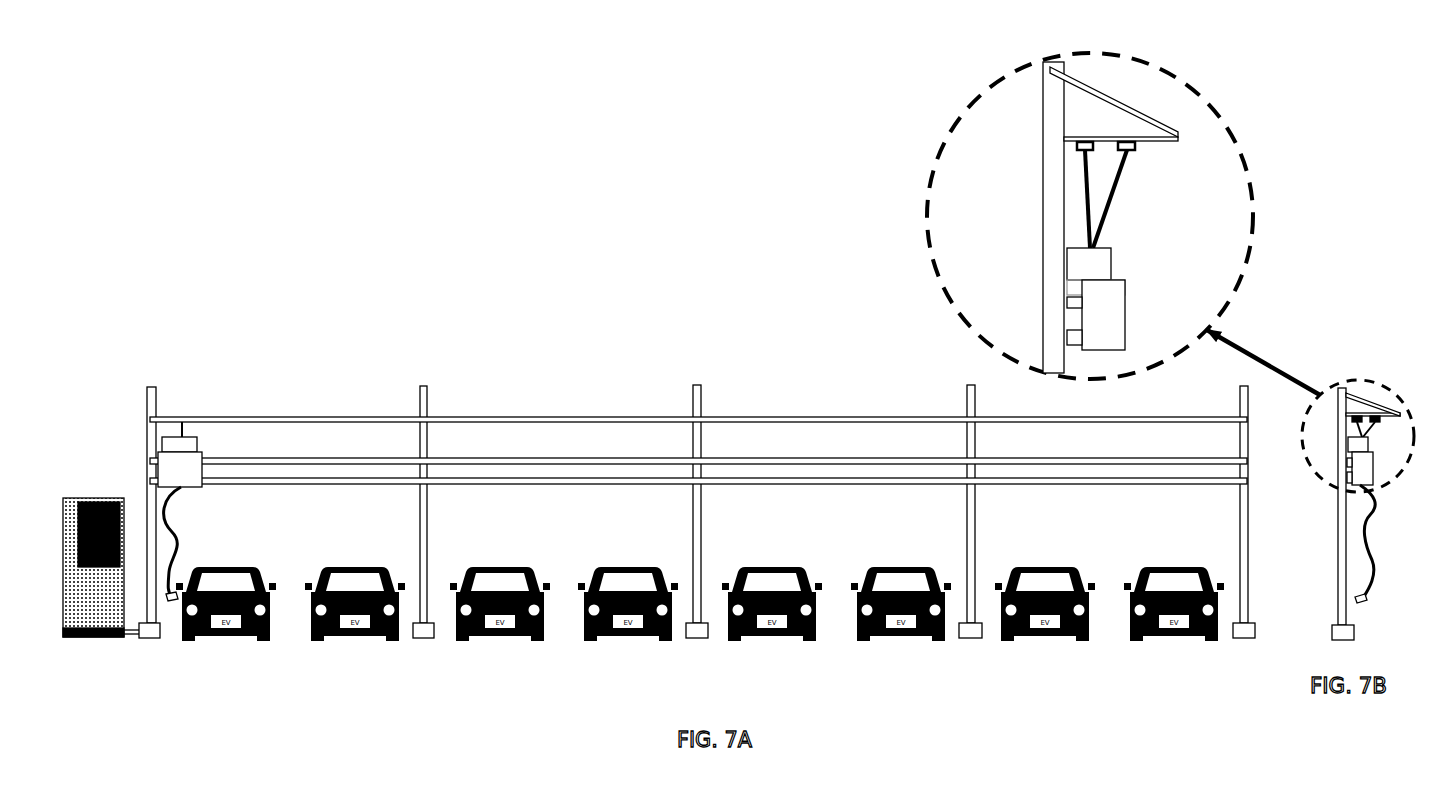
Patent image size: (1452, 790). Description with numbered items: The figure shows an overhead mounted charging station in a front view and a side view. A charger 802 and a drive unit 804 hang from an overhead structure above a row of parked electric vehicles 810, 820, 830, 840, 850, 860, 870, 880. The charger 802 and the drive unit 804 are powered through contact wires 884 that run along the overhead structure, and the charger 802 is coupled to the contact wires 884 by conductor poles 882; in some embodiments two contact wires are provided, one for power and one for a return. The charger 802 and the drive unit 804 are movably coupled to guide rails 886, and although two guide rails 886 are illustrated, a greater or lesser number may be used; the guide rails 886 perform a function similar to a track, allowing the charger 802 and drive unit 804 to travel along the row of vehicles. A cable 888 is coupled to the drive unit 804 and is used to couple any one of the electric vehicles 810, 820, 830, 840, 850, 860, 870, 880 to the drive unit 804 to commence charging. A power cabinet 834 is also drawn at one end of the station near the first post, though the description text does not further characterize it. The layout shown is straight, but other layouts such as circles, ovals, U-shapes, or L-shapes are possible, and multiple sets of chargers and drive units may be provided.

In FIG. 7A, the charger 802 is at (173, 430).
In FIG. 7B, the charger 802 is at (1111, 263).
In FIG. 7A, the drive unit 804 is at (206, 450).
In FIG. 7B, the drive unit 804 is at (1126, 320).
In FIG. 7A, the electric vehicle 810 is at (229, 641).
In FIG. 7A, the electric vehicle 820 is at (358, 641).
In FIG. 7A, the electric vehicle 830 is at (503, 641).
In FIG. 7A, the electric vehicle 840 is at (631, 641).
In FIG. 7A, the electric vehicle 850 is at (775, 641).
In FIG. 7A, the electric vehicle 860 is at (904, 641).
In FIG. 7A, the electric vehicle 870 is at (1048, 641).
In FIG. 7A, the electric vehicle 880 is at (1177, 641).
In FIG. 7A, the power supply cabinet 834 is at (103, 643).
In FIG. 7A, the conductor poles 882 is at (184, 430).
In FIG. 7B, the conductor poles 882 is at (1095, 203).
In FIG. 7A, the contact wires 884 is at (600, 415).
In FIG. 7B, the contact wires 884 is at (1087, 140).
In FIG. 7A, the guide rails 886 is at (855, 477).
In FIG. 7B, the guide rails 886 is at (1066, 328).
In FIG. 7A, the cable 888 is at (183, 532).
In FIG. 7B, the cable 888 is at (1380, 523).